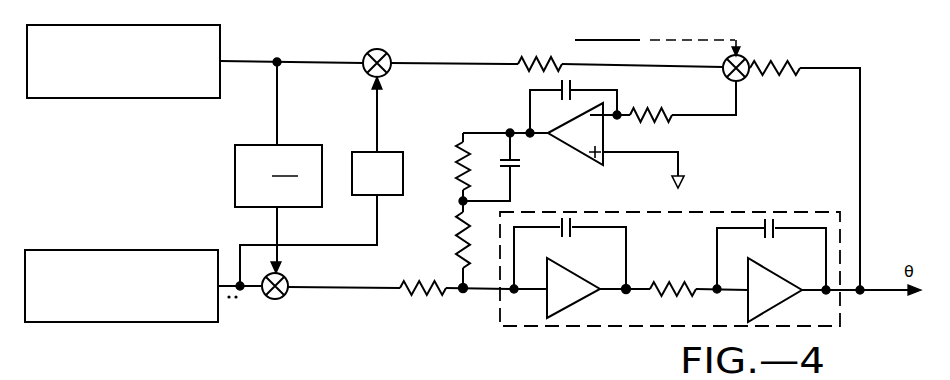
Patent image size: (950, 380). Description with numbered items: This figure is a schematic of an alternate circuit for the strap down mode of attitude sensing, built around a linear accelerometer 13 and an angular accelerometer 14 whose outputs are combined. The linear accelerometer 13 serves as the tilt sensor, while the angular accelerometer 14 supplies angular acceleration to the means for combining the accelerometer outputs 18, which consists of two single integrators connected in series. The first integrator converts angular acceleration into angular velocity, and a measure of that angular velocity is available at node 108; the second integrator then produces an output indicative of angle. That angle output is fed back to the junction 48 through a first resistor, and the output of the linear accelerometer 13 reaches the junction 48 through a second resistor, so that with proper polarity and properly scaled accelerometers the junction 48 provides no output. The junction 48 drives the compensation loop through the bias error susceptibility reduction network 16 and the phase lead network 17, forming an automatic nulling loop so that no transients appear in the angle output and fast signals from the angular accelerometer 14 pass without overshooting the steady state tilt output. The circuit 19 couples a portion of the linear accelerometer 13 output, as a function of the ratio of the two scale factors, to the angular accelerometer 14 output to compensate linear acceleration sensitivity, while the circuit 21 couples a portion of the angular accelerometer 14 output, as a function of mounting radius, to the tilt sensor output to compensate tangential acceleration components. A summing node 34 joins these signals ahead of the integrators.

The linear accelerometer 13 is at (222, 42).
The angular accelerometer 14 is at (162, 250).
The angular accelerometer bias error susceptibility reduction network 16 is at (512, 103).
The phase lead network 17 is at (538, 178).
The means for combining the angular and linear accelerometer outputs 18 is at (680, 249).
The circuit for coupling a portion of the linear accelerometer output to the angular 19 is at (235, 148).
The circuit for coupling a portion of the angular accelerometer output to the linear 21 is at (395, 152).
The summing node 34 is at (468, 295).
The junction 48 is at (745, 57).
The node 108 is at (628, 285).